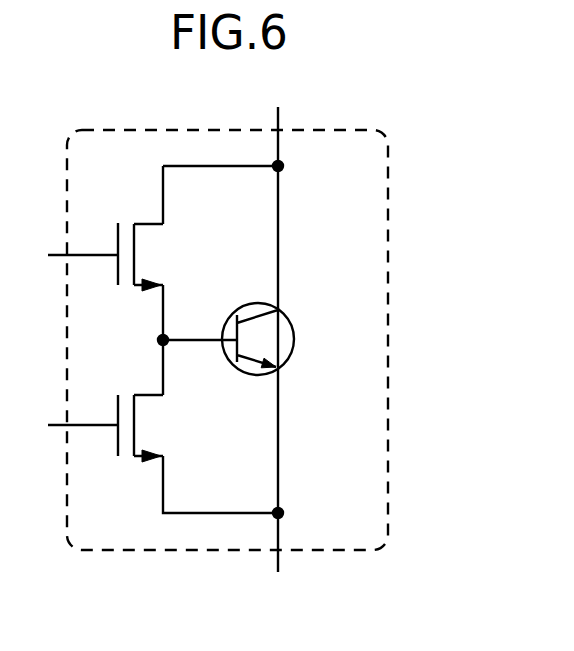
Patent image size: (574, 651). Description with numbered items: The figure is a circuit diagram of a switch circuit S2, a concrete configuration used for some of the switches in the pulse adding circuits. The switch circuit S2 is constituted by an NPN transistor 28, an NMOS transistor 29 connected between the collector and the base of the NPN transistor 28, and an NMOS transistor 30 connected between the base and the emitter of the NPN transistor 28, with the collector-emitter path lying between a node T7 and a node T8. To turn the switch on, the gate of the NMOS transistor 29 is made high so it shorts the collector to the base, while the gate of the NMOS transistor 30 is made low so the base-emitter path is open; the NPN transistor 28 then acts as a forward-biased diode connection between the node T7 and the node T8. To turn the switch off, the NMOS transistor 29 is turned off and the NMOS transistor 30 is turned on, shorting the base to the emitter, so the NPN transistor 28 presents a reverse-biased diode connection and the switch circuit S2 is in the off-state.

The NPN transistor 28 is at (290, 312).
The NMOS transistor 29 is at (163, 256).
The NMOS transistor 30 is at (162, 428).
The switch circuit S2 is at (390, 252).
The node T7 is at (280, 121).
The node T8 is at (280, 561).